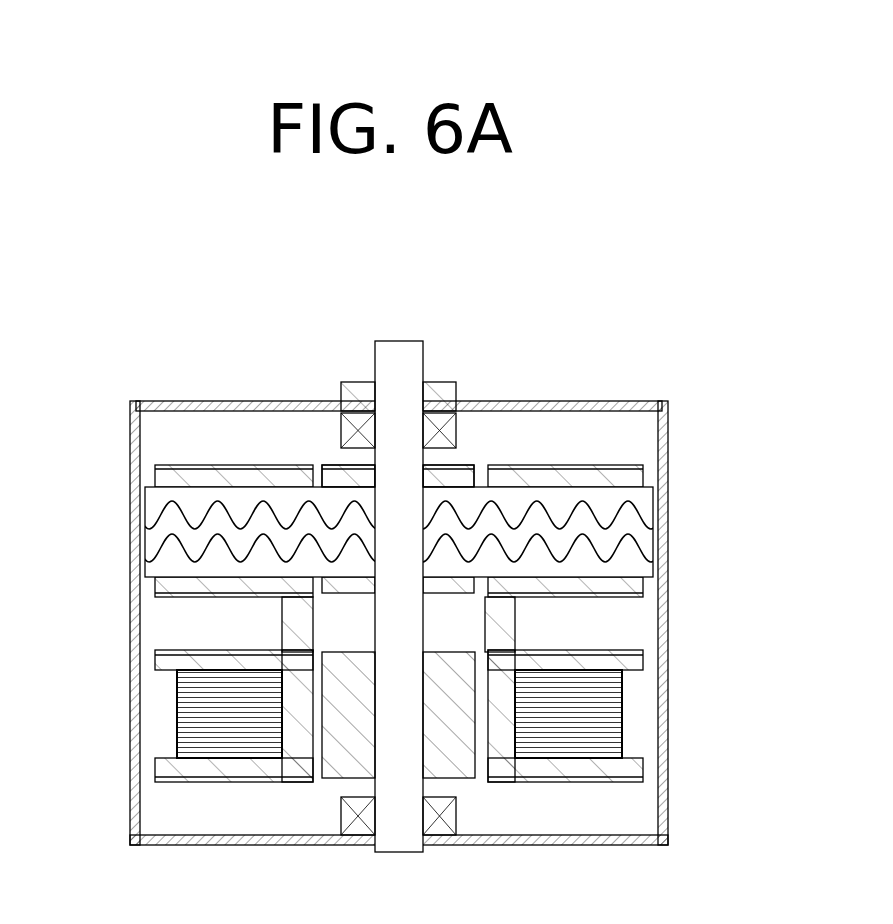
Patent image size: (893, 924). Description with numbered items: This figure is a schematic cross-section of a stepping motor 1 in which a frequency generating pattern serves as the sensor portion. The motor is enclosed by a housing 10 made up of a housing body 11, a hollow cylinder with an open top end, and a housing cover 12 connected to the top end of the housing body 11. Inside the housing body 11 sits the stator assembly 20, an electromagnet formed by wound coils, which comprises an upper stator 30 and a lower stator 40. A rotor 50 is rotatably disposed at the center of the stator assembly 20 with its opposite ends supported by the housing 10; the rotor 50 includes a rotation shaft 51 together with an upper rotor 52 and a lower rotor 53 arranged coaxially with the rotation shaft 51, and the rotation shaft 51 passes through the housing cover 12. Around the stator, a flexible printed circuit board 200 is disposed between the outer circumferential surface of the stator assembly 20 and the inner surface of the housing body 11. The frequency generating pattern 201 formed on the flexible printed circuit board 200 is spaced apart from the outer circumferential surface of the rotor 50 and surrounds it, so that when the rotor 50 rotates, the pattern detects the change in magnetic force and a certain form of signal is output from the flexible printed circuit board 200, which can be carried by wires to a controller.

The stepping motor 1 is at (616, 268).
The housing 10 is at (389, 595).
The housing body 11 is at (668, 430).
The housing cover 12 is at (622, 400).
The stator assembly 20 is at (404, 623).
The upper stator 30 is at (645, 586).
The lower stator 40 is at (645, 769).
The rotor 50 is at (397, 586).
The rotation shaft 51 is at (420, 340).
The upper rotor 52 is at (460, 478).
The lower rotor 53 is at (462, 768).
The flexible printed circuit board 200 is at (406, 532).
The frequency generating pattern 201 is at (162, 515).